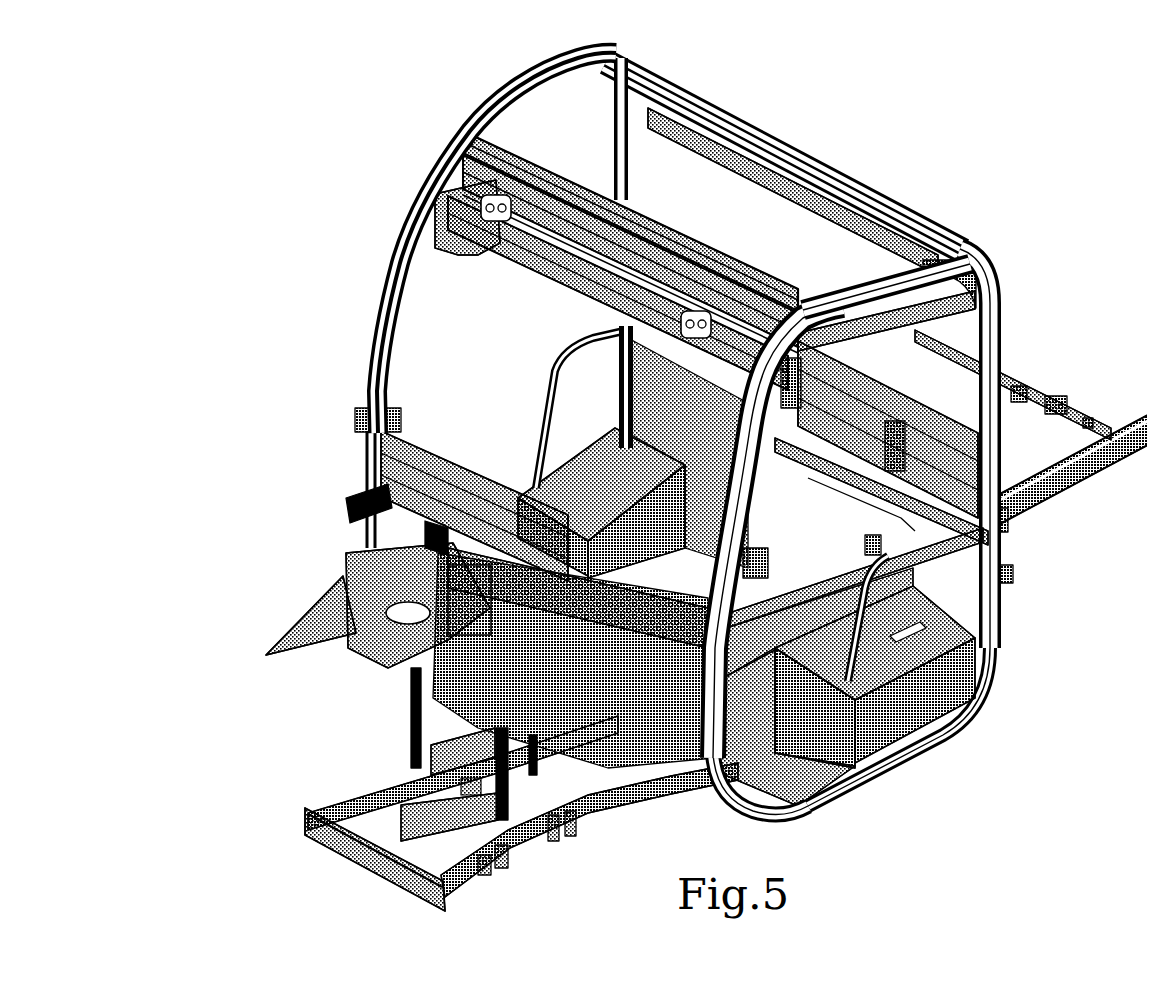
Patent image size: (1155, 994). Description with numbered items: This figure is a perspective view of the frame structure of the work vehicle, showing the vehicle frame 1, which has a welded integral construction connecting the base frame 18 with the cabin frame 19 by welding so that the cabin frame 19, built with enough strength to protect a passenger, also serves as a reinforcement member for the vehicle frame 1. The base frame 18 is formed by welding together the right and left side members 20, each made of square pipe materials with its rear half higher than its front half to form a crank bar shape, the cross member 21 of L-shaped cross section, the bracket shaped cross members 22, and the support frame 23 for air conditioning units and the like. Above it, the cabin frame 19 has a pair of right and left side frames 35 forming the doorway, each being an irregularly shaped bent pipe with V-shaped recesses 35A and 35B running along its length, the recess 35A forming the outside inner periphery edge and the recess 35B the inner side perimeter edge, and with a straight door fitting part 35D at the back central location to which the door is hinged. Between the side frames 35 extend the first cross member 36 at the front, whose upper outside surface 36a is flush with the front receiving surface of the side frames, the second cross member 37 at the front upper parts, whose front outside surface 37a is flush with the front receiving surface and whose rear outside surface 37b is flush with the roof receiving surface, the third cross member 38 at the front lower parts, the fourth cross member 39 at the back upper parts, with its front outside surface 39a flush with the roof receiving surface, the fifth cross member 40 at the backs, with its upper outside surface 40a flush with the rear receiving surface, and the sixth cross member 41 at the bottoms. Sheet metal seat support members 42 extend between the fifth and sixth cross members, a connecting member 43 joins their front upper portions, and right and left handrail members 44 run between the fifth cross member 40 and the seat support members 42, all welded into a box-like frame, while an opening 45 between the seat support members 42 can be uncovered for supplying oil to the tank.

The vehicle frame 1 is at (242, 477).
The base frame 18 is at (1063, 490).
The cabin frame 19 is at (373, 281).
The side members 20 is at (1085, 465).
The cross member 21 is at (347, 853).
The bracket shaped cross members 22 is at (543, 833).
The support frame 23 is at (346, 555).
The side frame 35 is at (510, 93).
The recess 35A is at (915, 745).
The recess 35B is at (395, 337).
The door fitting part 35D is at (992, 535).
The 1st cross member 36 is at (357, 454).
The upper outside surface 36a is at (460, 470).
The 2nd cross member 37 is at (647, 210).
The front outside surface 37a is at (457, 240).
The rear outside surface 37b is at (527, 137).
The 3rd cross member 38 is at (657, 765).
The 4th cross member 39 is at (738, 108).
The front outside surface 39a is at (832, 195).
The 5th cross member 40 is at (822, 462).
The upper outside surface 40a is at (836, 338).
The 6th cross member 41 is at (832, 790).
The seat support member 42 is at (950, 670).
The connecting member 43 is at (748, 605).
The handrail members 44 is at (843, 600).
The opening 45 is at (823, 530).